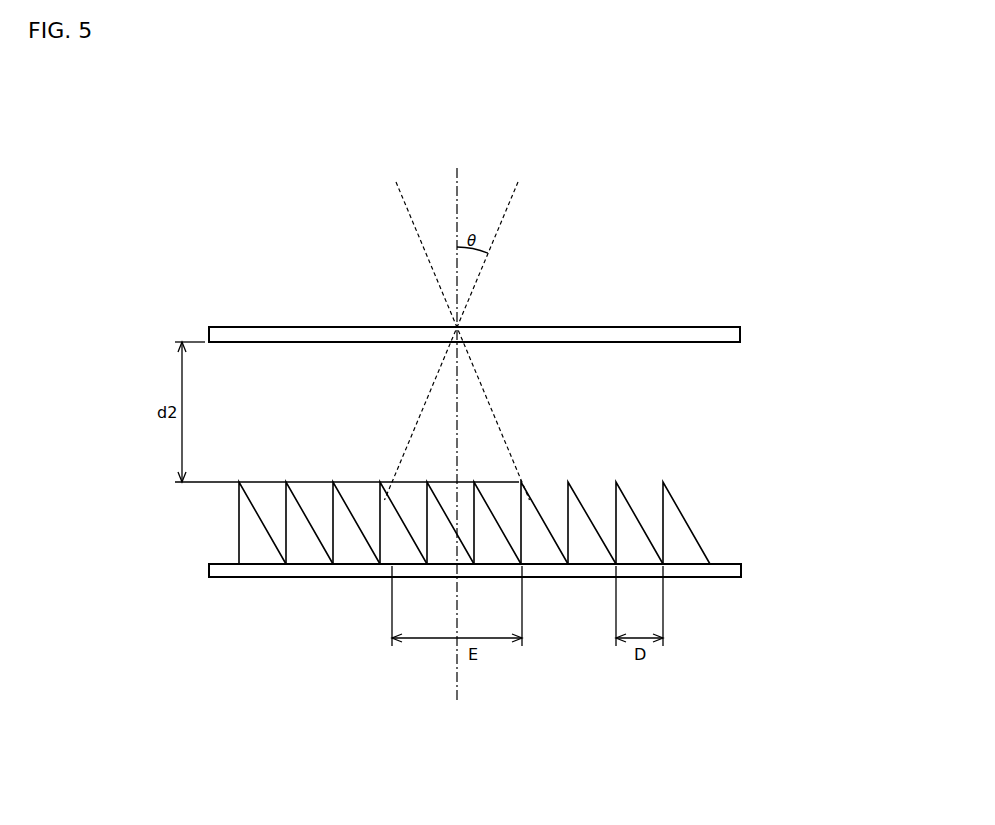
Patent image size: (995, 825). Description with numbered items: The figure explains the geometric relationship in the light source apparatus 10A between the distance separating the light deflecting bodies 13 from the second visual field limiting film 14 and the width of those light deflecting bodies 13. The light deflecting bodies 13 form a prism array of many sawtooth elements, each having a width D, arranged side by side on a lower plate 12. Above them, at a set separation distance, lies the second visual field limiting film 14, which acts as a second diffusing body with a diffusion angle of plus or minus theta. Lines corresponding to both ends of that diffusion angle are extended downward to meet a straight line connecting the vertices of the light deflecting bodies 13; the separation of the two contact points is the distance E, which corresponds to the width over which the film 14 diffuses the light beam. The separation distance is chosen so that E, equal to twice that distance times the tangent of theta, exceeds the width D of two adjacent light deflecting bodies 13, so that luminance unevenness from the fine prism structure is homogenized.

The light source apparatus 10A is at (710, 265).
The second visual field limiting film 12 is at (742, 568).
The light deflecting bodies 13 is at (687, 522).
The second visual field limiting film 14 is at (742, 334).